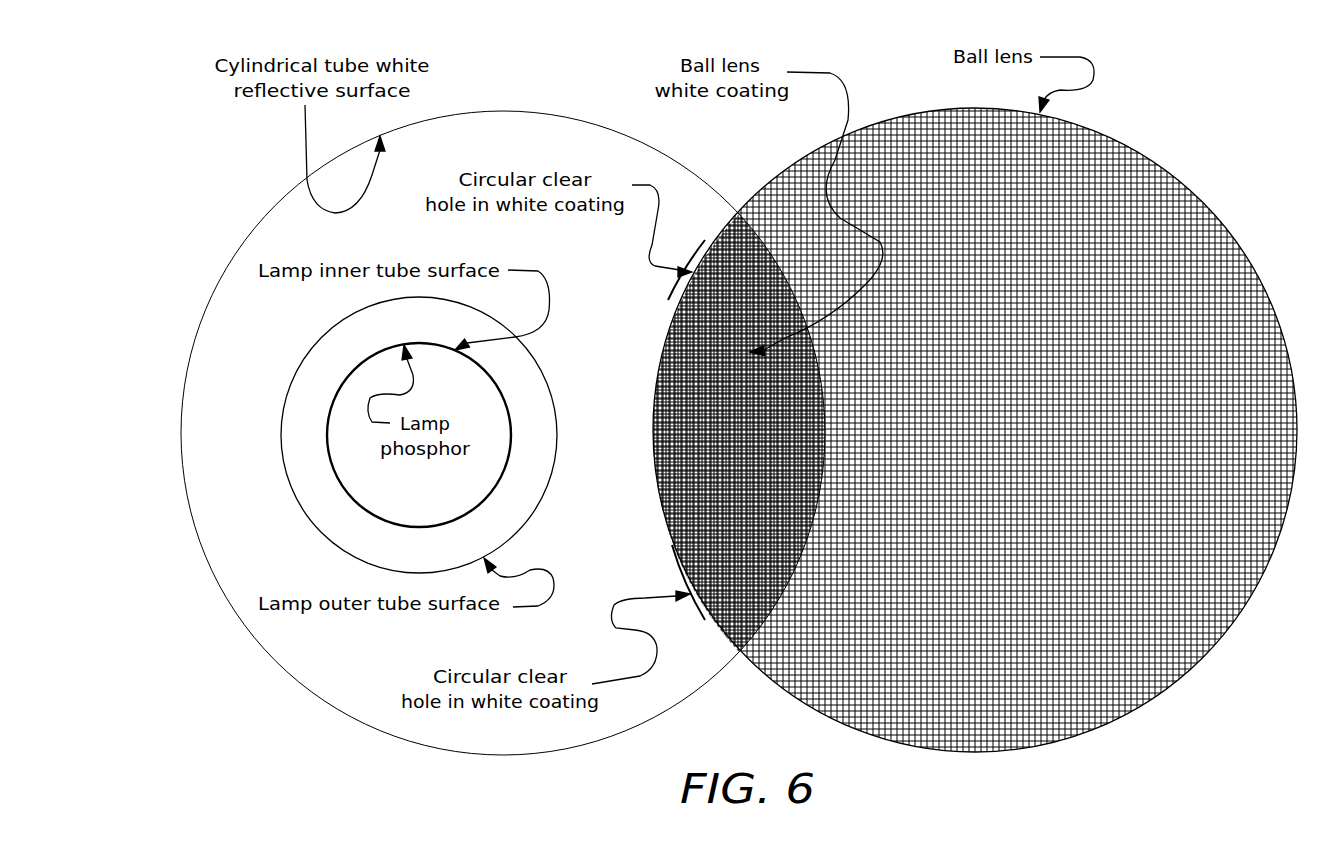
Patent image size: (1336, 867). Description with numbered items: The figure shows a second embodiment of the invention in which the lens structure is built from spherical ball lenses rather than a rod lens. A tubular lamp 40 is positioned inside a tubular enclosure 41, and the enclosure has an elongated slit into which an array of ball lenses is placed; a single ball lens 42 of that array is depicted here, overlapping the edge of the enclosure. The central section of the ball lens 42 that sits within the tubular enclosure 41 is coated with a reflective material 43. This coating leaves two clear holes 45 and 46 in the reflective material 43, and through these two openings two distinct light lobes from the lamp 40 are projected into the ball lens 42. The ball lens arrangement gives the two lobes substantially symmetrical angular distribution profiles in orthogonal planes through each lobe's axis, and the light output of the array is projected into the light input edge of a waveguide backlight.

The tubular lamp 40 is at (280, 427).
The tubular enclosure 41 is at (360, 722).
The ball lens 42 is at (893, 115).
The reflective material 43 is at (652, 425).
The clear hole 45 is at (692, 280).
The clear hole 46 is at (690, 565).